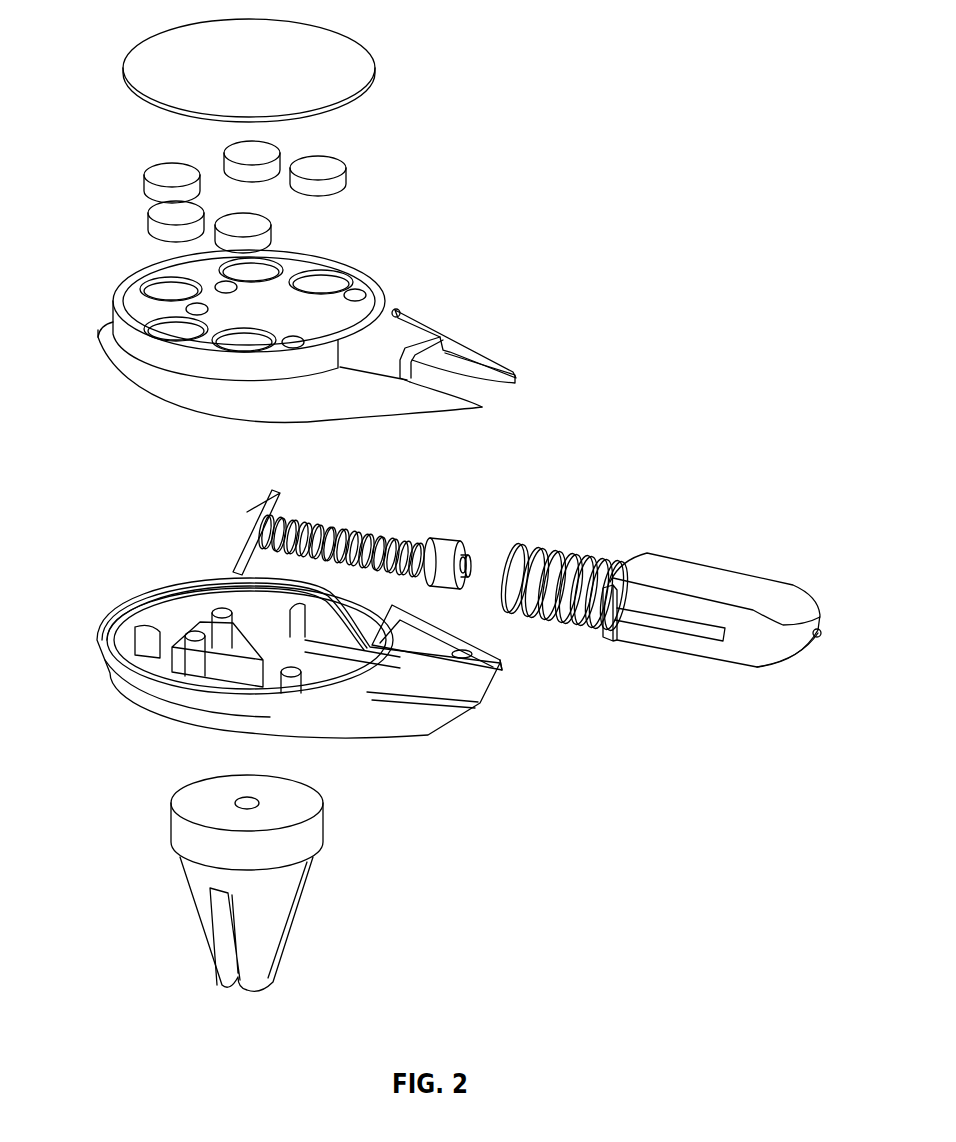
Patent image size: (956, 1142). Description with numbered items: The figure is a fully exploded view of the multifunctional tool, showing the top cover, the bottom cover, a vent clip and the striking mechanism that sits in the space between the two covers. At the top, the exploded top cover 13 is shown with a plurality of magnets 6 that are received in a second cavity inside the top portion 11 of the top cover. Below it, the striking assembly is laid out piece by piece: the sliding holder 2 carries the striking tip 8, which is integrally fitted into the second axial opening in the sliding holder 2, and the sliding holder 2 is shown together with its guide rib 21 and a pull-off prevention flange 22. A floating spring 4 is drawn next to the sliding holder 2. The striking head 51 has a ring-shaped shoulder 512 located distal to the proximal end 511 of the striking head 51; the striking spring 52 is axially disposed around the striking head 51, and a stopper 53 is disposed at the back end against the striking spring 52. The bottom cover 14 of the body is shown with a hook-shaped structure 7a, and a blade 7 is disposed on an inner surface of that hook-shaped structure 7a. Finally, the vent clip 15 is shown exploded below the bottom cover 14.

The sliding holder 2 is at (717, 577).
The floating spring 4 is at (578, 547).
The magnets 6 is at (167, 177).
The blade 7 is at (413, 633).
The hook-shaped structure 7a is at (503, 660).
The striking tip 8 is at (817, 640).
The top portion of the top cover 11 is at (375, 283).
The top cover 13 is at (472, 337).
The bottom cover 14 is at (143, 705).
The vent clip 15 is at (288, 867).
The guide rib 21 is at (683, 628).
The pull-off prevention flange 22 is at (612, 643).
The striking head 51 is at (393, 540).
The striking spring 52 is at (353, 530).
The stopper 53 is at (260, 508).
The proximal end of the striking head 511 is at (467, 565).
The ring-shaped shoulder 512 is at (440, 540).